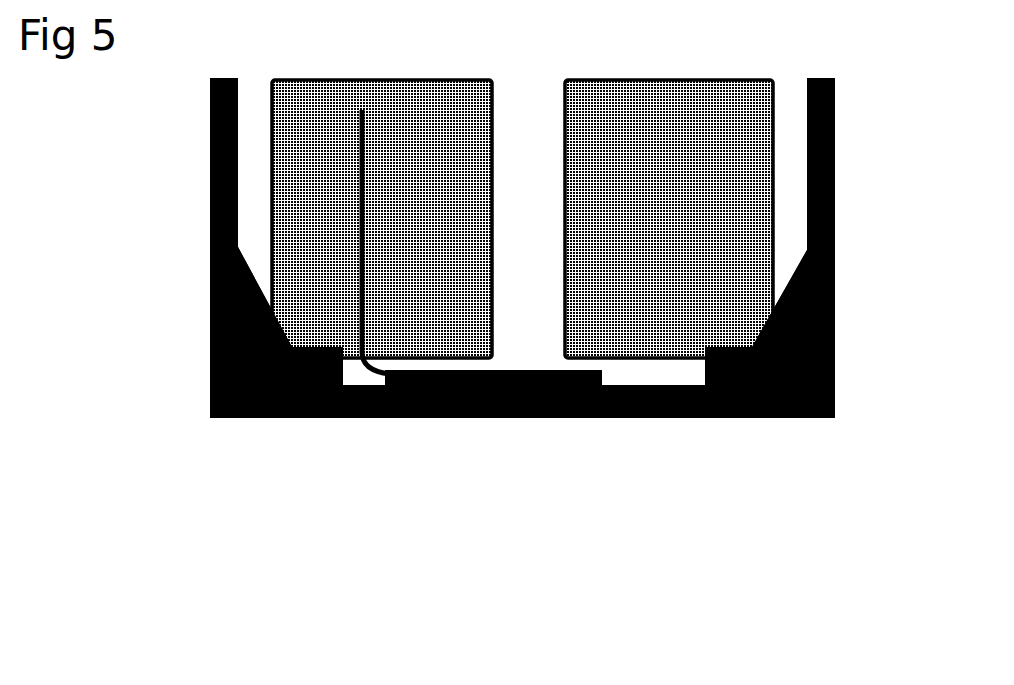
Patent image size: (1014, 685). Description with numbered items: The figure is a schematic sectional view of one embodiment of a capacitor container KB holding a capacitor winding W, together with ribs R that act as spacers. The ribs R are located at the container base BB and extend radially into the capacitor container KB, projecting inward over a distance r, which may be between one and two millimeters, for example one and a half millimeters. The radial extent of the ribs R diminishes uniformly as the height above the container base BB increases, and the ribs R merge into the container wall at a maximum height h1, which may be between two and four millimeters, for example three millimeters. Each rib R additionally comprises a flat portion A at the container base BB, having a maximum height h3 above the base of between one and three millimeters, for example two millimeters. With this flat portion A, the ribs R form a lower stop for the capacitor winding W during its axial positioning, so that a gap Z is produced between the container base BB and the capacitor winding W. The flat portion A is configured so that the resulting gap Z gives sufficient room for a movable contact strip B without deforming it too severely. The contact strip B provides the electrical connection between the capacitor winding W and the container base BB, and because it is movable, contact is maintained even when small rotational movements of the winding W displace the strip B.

The capacitor winding W is at (605, 86).
The capacitor container KB is at (211, 135).
The container base BB is at (563, 418).
The flat portion A is at (333, 352).
The ribs R is at (250, 280).
The gap Z is at (612, 373).
The contact strip B is at (362, 112).
The distance r is at (293, 352).
The maximum height h1 is at (210, 260).
The maximum height h3 is at (695, 362).